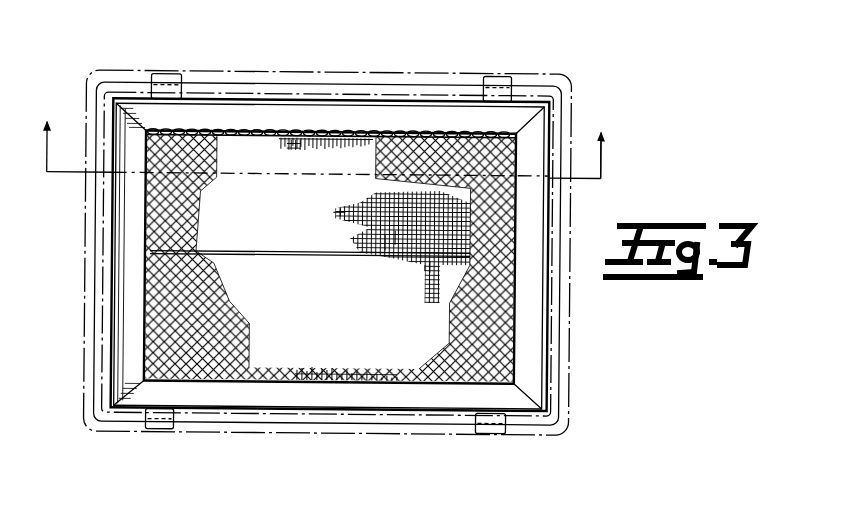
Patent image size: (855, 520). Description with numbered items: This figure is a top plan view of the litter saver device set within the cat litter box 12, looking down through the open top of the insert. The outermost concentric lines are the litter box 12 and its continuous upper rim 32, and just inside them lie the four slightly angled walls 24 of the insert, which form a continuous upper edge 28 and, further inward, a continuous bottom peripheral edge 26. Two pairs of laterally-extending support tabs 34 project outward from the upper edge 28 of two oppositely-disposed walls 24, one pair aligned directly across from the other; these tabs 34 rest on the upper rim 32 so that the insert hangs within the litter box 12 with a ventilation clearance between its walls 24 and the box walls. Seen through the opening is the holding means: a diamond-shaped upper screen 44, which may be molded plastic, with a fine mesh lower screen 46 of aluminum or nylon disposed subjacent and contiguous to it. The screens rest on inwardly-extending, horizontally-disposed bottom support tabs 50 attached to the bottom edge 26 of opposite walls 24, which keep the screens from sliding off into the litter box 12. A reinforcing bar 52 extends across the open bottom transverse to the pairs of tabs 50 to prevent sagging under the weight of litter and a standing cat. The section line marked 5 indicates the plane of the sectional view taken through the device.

The cat litter box 12 is at (577, 392).
The angled walls 24 is at (150, 115).
The continuous bottom peripheral edge 26 is at (278, 134).
The continuous upper edge 28 is at (318, 100).
The upper rim 32 is at (260, 425).
The support tabs 34 is at (492, 82).
The upper screen 44 is at (397, 152).
The lower screen 46 is at (396, 216).
The bottom support tabs 50 is at (238, 346).
The reinforcing bar 52 is at (287, 250).
The section line 5- 5 is at (324, 138).